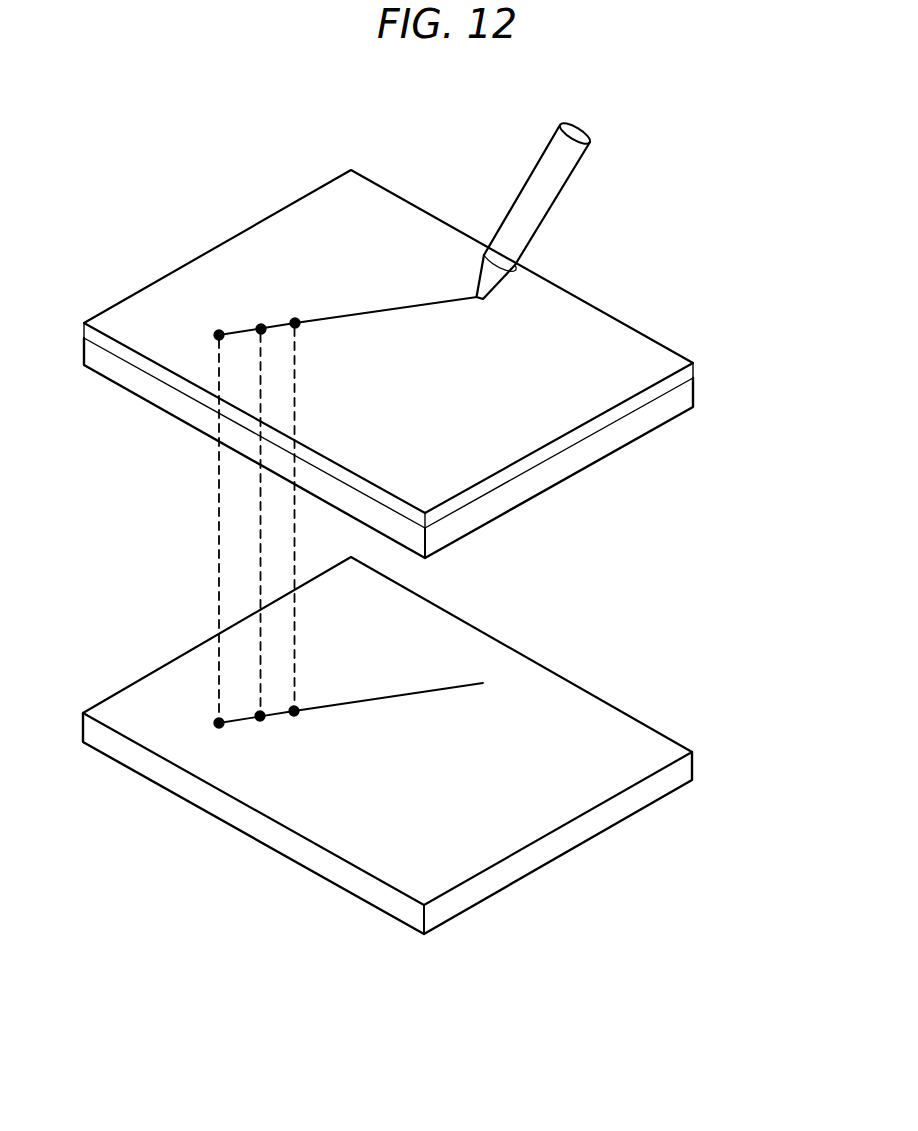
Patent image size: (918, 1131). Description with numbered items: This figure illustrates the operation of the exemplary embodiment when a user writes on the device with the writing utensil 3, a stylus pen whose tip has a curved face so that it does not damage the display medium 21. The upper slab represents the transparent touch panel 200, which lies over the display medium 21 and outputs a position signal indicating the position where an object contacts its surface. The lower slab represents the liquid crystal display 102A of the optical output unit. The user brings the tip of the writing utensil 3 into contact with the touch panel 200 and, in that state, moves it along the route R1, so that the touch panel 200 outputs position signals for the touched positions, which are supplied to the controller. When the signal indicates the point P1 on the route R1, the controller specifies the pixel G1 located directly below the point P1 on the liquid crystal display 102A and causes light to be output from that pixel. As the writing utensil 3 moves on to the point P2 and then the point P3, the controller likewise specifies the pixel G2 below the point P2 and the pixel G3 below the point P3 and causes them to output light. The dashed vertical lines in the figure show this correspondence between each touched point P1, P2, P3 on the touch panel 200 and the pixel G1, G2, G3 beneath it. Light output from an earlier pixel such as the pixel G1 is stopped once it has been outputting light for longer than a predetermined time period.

The writing utensil 3 is at (568, 178).
The touch panel 200 is at (695, 372).
The display medium 21 is at (695, 402).
The liquid crystal display 102A is at (694, 758).
The route R1 is at (380, 308).
The point P1 is at (219, 335).
The point P2 is at (261, 329).
The point P3 is at (295, 323).
The pixel G1 is at (219, 723).
The pixel G2 is at (260, 716).
The pixel G3 is at (294, 711).